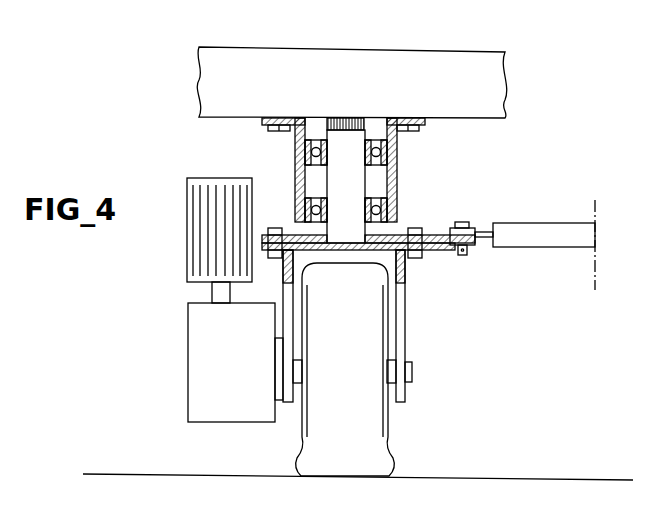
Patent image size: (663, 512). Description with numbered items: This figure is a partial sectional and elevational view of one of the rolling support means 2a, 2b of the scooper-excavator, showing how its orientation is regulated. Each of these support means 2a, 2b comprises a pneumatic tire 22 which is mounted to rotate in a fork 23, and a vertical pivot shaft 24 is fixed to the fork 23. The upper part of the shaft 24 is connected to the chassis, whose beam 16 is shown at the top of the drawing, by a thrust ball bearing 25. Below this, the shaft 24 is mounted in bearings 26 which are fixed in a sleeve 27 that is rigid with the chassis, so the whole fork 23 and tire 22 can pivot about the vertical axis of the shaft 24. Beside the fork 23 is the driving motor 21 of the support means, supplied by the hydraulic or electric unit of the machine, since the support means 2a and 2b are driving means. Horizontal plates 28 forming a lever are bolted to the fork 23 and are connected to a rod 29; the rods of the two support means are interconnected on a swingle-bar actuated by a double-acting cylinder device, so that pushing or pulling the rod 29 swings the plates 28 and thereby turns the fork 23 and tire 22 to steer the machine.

The support beam 16 is at (390, 48).
The driving motor 21 is at (187, 356).
The pneumatic tire 22 is at (372, 326).
The fork 23 is at (405, 276).
The vertical pivot shaft 24 is at (357, 185).
The thrust ball bearing 25 is at (345, 125).
The bearings 26 is at (315, 200).
The sleeve 27 is at (397, 166).
The horizontal plates 28 is at (437, 238).
The rods 29 is at (545, 240).
The rolling support means 2a is at (395, 363).
The rolling support means 2b is at (368, 363).